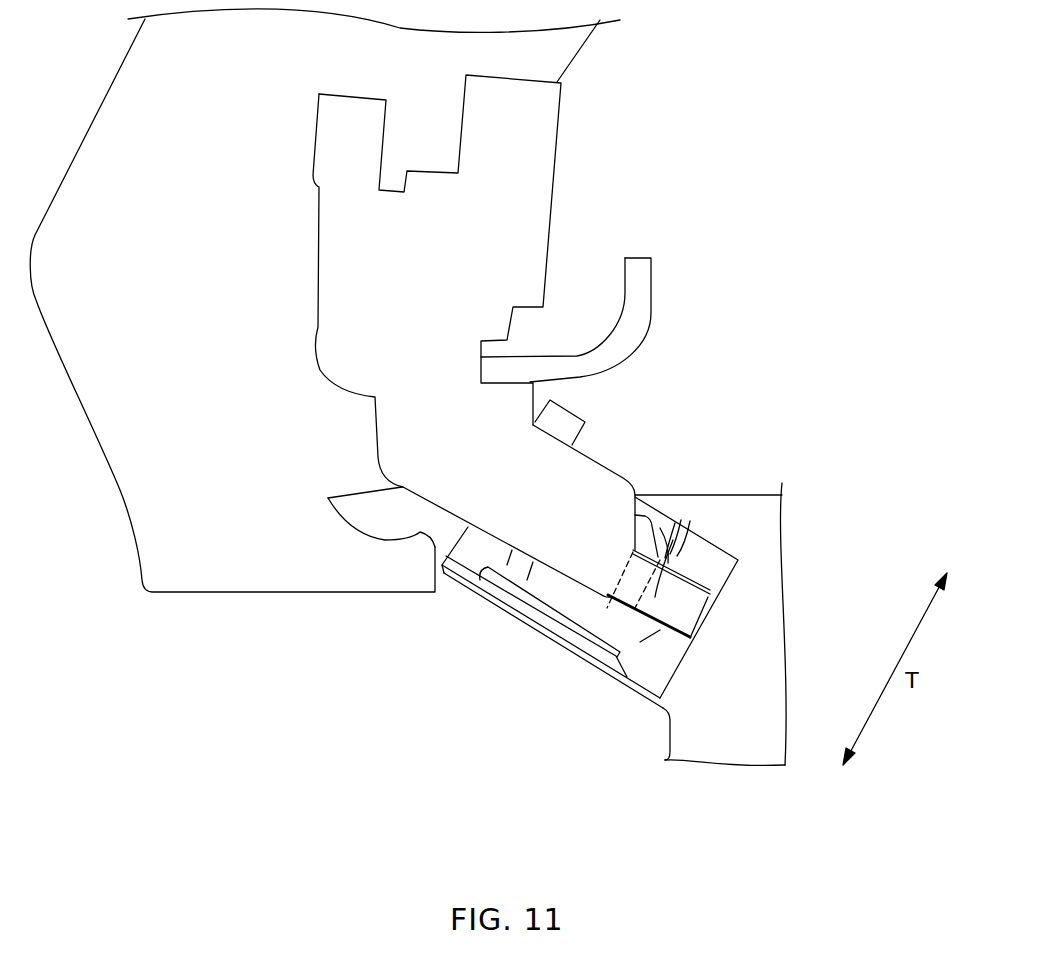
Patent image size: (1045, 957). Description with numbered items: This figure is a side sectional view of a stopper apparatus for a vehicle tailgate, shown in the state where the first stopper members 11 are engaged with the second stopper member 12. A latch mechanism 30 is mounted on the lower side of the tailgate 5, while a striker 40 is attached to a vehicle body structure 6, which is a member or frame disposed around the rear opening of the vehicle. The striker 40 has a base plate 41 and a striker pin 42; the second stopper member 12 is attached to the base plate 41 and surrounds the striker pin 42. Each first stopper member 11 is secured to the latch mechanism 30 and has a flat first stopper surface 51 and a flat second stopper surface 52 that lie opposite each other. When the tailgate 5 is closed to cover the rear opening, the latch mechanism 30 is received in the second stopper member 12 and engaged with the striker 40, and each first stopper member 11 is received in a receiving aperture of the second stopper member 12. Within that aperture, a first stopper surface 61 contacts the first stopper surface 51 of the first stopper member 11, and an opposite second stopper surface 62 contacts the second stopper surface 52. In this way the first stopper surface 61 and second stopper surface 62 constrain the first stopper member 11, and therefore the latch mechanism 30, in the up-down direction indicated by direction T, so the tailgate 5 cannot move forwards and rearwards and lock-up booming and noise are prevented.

The tailgate 5 is at (562, 43).
The vehicle body structure 6 is at (735, 742).
The first stopper member 11 is at (673, 540).
The second stopper member 12 is at (722, 558).
The latch mechanism 30 is at (615, 462).
The striker 40 is at (553, 651).
The base plate 41 is at (543, 607).
The striker pin 42 is at (648, 513).
The first stopper surface 51 is at (680, 550).
The second stopper surface 52 is at (660, 630).
The first stopper surface 61 is at (713, 615).
The second stopper surface 62 is at (707, 622).